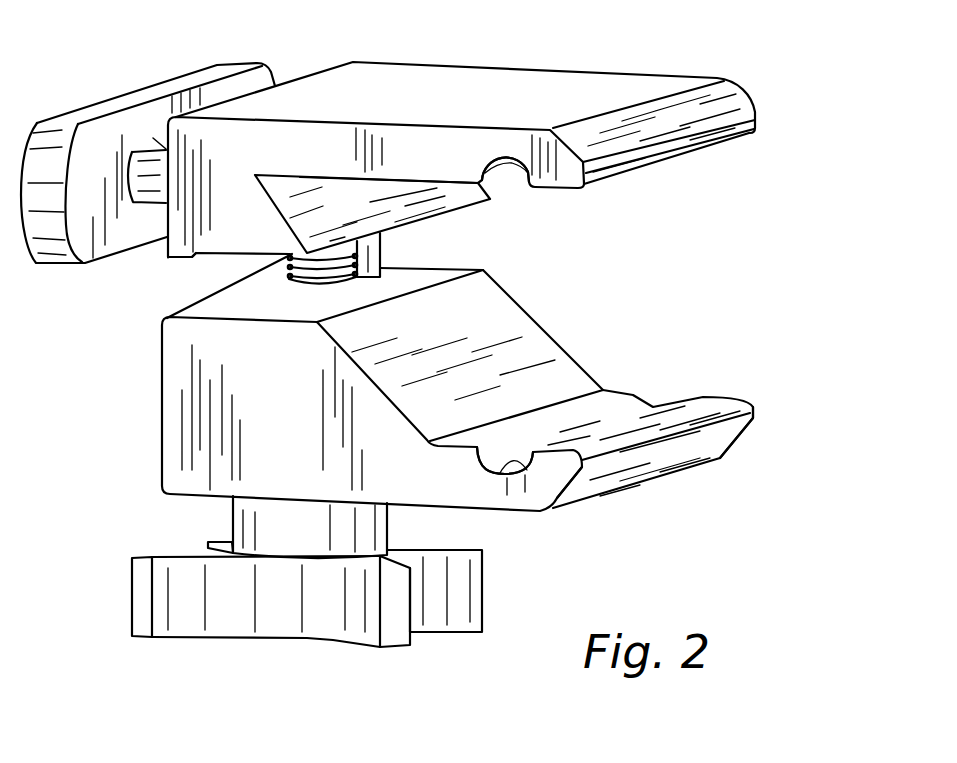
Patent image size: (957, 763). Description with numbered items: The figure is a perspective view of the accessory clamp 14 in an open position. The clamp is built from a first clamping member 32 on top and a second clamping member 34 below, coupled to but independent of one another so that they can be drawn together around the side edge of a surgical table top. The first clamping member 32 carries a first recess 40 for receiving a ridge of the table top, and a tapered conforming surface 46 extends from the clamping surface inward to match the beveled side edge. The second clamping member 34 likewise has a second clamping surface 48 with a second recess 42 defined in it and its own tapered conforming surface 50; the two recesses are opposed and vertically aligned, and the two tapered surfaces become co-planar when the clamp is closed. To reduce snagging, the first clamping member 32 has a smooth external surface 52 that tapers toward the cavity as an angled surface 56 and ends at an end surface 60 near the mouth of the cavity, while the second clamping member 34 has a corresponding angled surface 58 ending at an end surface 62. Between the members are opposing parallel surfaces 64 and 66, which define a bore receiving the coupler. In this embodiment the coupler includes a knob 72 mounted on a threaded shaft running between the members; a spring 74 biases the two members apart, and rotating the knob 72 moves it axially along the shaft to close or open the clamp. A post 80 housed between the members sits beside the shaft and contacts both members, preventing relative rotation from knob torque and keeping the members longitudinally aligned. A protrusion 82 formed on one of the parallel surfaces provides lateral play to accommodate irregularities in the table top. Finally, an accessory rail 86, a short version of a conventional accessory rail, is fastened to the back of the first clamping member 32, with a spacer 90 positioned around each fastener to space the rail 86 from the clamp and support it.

The accessory clamp 14 is at (88, 412).
The first clamping member 32 is at (423, 143).
The second clamping member 34 is at (217, 452).
The first recess 40 is at (518, 183).
The second recess 42 is at (500, 474).
The tapered conforming surface 46 is at (407, 204).
The second clamping surface 48 is at (720, 398).
The tapered conforming surface 50 is at (528, 364).
The external surface 52 is at (545, 90).
The angled surface 56 is at (733, 101).
The angled surface 58 is at (684, 461).
The end surface 60 is at (718, 132).
The end surface 62 is at (753, 417).
The parallel surface 64 is at (238, 253).
The parallel surface 66 is at (283, 297).
The knob 72 is at (261, 612).
The spring 74 is at (290, 270).
The post 80 is at (377, 255).
The protrusion 82 is at (168, 258).
The accessory rail 86 is at (119, 99).
The spacer 90 is at (140, 165).